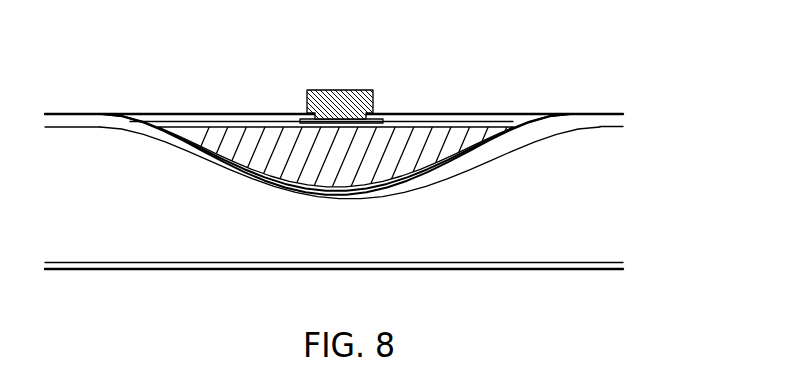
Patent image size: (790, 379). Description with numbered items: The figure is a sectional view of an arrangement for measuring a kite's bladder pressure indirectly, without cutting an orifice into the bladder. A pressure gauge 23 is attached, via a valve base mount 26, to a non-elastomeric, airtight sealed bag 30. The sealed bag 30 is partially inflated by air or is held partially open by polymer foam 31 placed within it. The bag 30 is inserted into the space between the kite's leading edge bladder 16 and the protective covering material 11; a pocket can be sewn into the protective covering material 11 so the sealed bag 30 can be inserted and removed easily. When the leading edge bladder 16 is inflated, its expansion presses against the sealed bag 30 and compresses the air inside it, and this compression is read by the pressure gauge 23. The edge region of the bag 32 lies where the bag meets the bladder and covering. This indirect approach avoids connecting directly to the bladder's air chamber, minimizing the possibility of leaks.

The protective covering material 11 is at (595, 112).
The leading edge bladder 16 is at (93, 118).
The pressure gauge 23 is at (355, 90).
The valve base mount 26 is at (300, 117).
The sealed bag 30 is at (165, 121).
The polymer foam 31 is at (260, 137).
The membrane edge 32 is at (518, 123).